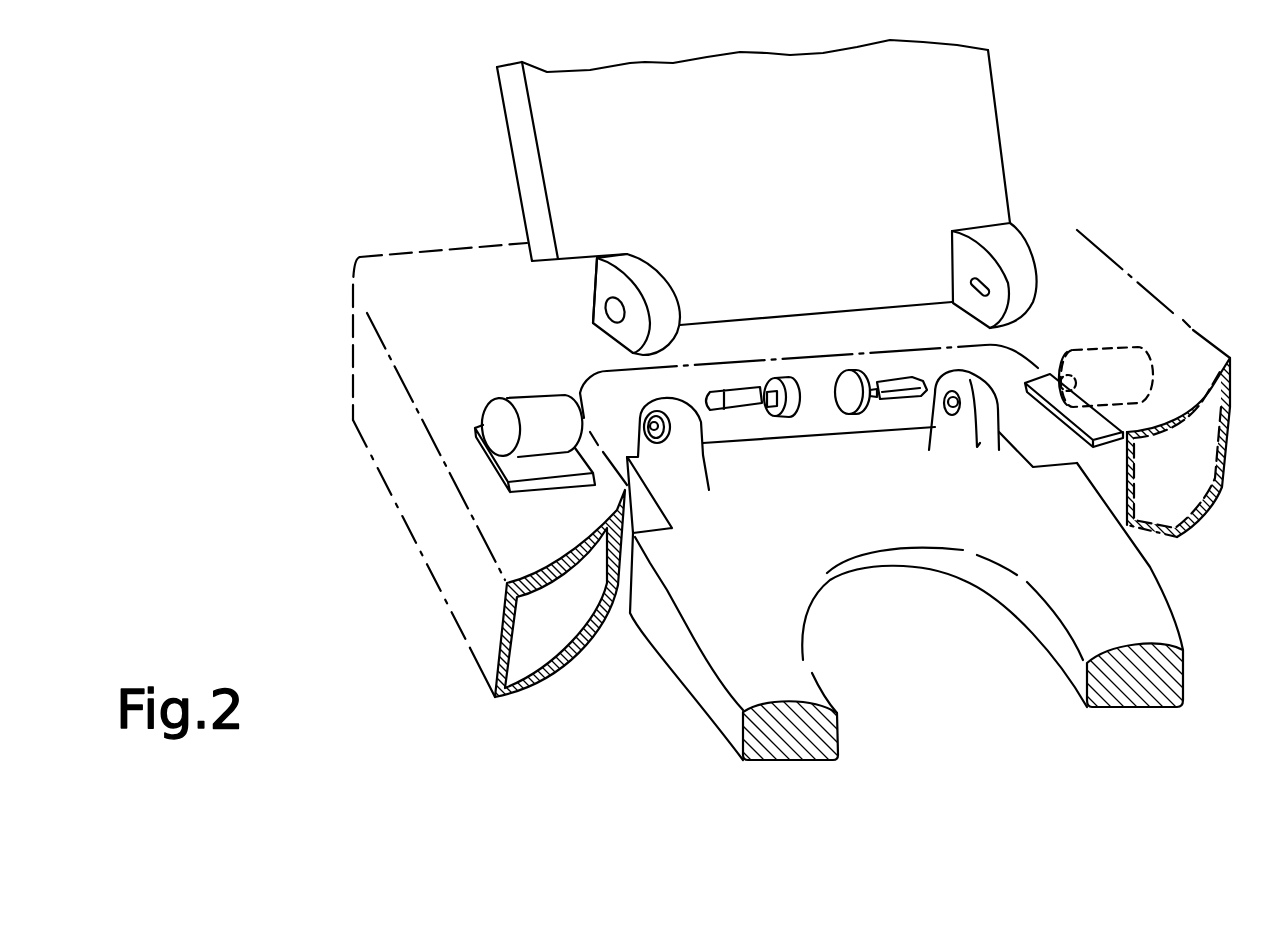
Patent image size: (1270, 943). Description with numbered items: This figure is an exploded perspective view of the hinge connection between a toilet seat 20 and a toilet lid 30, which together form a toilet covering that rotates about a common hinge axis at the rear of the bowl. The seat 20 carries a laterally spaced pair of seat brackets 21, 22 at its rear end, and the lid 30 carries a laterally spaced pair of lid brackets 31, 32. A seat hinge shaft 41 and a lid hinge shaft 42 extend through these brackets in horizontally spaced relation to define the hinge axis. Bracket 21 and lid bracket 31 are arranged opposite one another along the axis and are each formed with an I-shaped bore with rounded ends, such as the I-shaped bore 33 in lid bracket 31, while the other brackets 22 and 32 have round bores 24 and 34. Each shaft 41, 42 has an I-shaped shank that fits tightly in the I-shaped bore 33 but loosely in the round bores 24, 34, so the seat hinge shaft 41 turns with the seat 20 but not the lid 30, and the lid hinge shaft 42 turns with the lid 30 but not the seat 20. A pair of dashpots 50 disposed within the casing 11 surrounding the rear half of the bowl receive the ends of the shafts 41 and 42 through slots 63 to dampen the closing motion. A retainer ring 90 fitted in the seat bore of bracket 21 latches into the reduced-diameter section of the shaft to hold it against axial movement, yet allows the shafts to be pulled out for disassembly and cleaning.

The casing 11 is at (1200, 330).
The toilet seat 20 is at (753, 688).
The seat bracket 21 is at (681, 447).
The seat bracket 22 is at (998, 437).
The round bore 24 is at (945, 423).
The toilet lid 30 is at (988, 48).
The lid bracket 31 is at (1003, 256).
The lid bracket 32 is at (595, 330).
The I-shaped bore 33 is at (962, 278).
The round bore 34 is at (612, 300).
The seat hinge shaft 41 is at (793, 417).
The lid hinge shaft 42 is at (868, 410).
The dashpot 50 is at (495, 417).
The slot 63 is at (1067, 377).
The retainer ring 90 is at (643, 445).